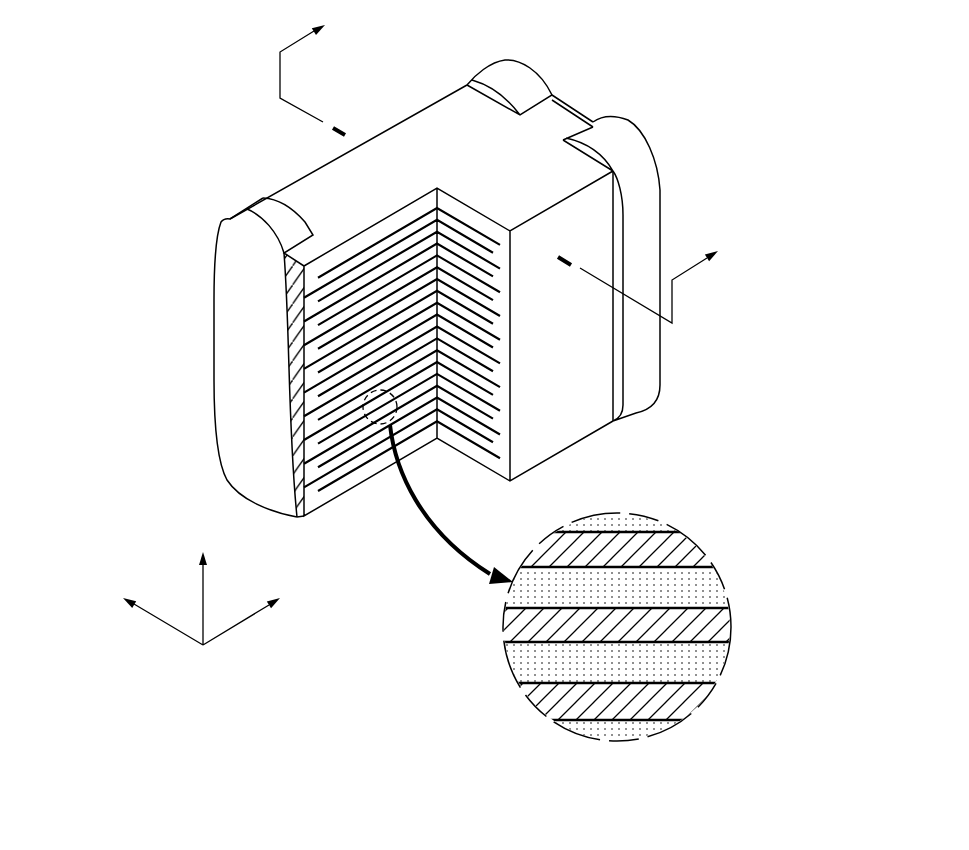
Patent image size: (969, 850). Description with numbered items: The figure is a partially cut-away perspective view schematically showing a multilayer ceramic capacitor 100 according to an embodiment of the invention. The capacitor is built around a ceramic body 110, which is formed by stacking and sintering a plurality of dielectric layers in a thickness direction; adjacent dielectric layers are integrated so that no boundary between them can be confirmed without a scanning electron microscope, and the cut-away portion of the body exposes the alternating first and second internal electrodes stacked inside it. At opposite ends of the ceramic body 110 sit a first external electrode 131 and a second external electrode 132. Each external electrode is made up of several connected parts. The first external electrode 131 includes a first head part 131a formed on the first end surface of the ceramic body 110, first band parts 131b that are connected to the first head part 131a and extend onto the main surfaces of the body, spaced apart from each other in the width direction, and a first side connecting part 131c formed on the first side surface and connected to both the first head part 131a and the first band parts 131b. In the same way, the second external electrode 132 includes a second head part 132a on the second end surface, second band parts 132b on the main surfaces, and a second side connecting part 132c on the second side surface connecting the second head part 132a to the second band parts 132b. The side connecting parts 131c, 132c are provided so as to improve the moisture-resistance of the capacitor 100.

The multilayer ceramic capacitor 100 is at (430, 22).
The ceramic body 110 is at (296, 170).
The first external electrode 131 is at (135, 308).
The first head part 131a is at (253, 362).
The first band part 131b is at (258, 213).
The first side connecting part 131c is at (255, 408).
The second external electrode 132 is at (800, 157).
The second head part 132a is at (647, 230).
The second band part 132b is at (617, 132).
The second side connecting part 132c is at (652, 357).